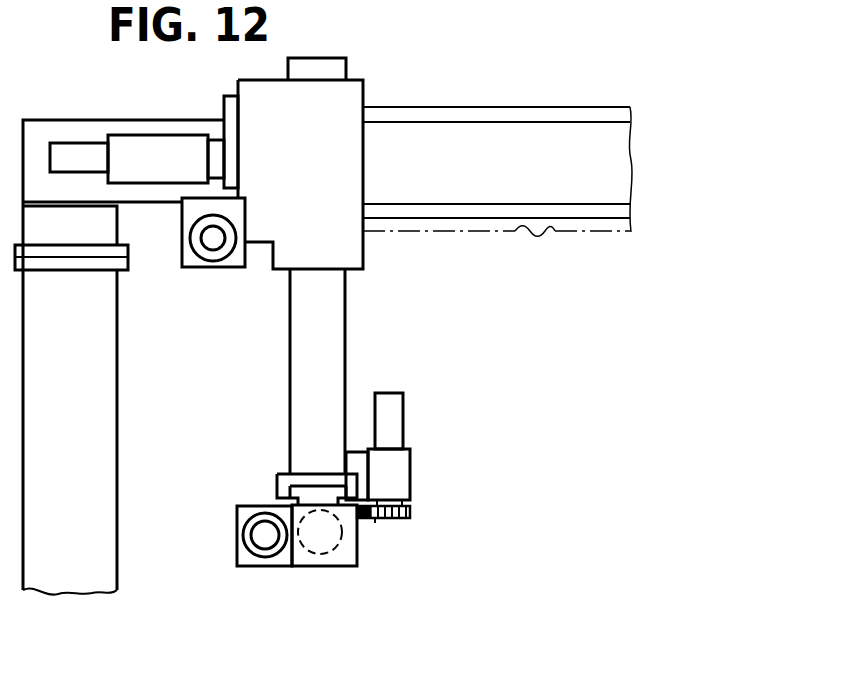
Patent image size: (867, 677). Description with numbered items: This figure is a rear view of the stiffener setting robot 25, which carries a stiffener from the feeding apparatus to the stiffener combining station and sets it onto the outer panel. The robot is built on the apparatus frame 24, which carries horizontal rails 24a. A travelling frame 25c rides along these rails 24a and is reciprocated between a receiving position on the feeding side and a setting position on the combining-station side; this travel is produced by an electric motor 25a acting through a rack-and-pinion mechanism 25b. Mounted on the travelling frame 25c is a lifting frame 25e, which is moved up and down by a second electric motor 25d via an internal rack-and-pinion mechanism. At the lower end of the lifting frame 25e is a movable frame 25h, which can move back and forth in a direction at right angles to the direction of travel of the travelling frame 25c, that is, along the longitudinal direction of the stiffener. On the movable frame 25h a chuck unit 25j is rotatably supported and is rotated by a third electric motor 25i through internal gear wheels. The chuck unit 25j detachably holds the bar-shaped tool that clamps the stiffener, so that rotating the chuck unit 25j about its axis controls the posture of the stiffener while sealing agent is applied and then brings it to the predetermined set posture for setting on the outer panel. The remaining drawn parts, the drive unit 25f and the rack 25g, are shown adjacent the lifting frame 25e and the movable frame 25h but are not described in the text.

The apparatus frame 24 is at (78, 120).
The rails 24a is at (508, 200).
The setting robot 25 is at (231, 91).
The electric motor 25a is at (213, 243).
The rack-and-pinion mechanism 25b is at (527, 234).
The travelling frame 25c is at (345, 96).
The electric motor 25d is at (158, 147).
The lifting frame 25e is at (323, 337).
The drive unit 25f is at (398, 473).
The rack 25g is at (372, 520).
The movable frame 25h is at (350, 553).
The electric motor 25i is at (262, 540).
The chuck unit 25j is at (323, 555).